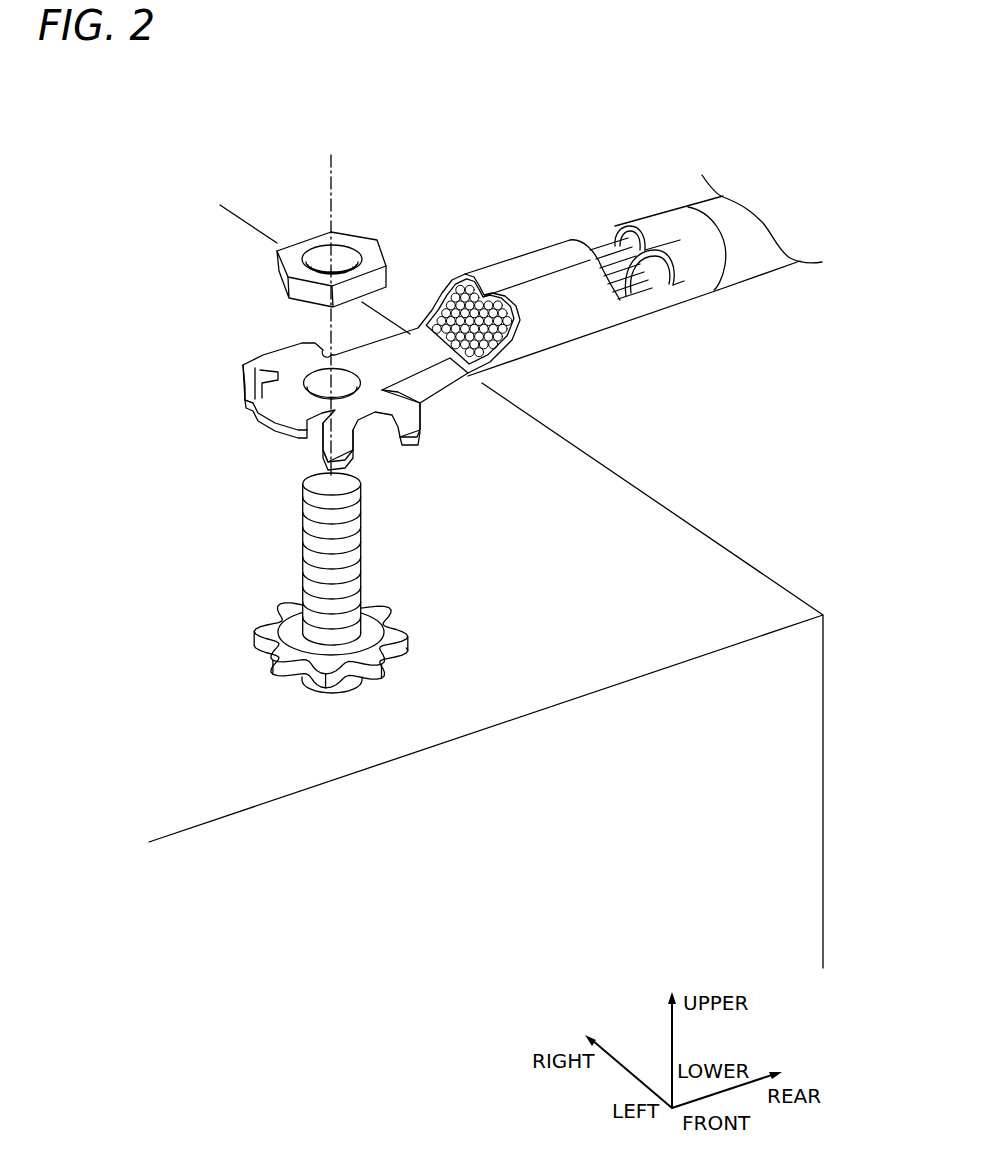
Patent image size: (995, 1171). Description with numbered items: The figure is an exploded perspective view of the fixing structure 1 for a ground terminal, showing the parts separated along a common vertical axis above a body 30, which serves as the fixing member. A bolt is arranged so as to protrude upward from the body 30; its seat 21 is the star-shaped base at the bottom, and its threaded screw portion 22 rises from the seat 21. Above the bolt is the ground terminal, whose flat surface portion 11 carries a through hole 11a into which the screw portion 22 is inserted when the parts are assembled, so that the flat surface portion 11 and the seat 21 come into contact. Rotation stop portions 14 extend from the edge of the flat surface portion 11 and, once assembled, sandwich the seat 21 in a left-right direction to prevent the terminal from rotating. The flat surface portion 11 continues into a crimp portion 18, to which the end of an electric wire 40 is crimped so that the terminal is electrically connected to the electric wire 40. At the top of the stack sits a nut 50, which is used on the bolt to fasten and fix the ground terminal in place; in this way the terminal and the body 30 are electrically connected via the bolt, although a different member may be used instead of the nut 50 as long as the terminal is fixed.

The fixing structure 1 is at (423, 279).
The flat surface portion 11 is at (423, 279).
The through hole 11a is at (318, 381).
The rotation stop portion 14 is at (252, 375).
The crimp portion 18 is at (550, 292).
The seat 21 is at (365, 668).
The screw portion 22 is at (361, 544).
The body 30 is at (212, 696).
The electric wire 40 is at (762, 287).
The nut 50 is at (353, 236).